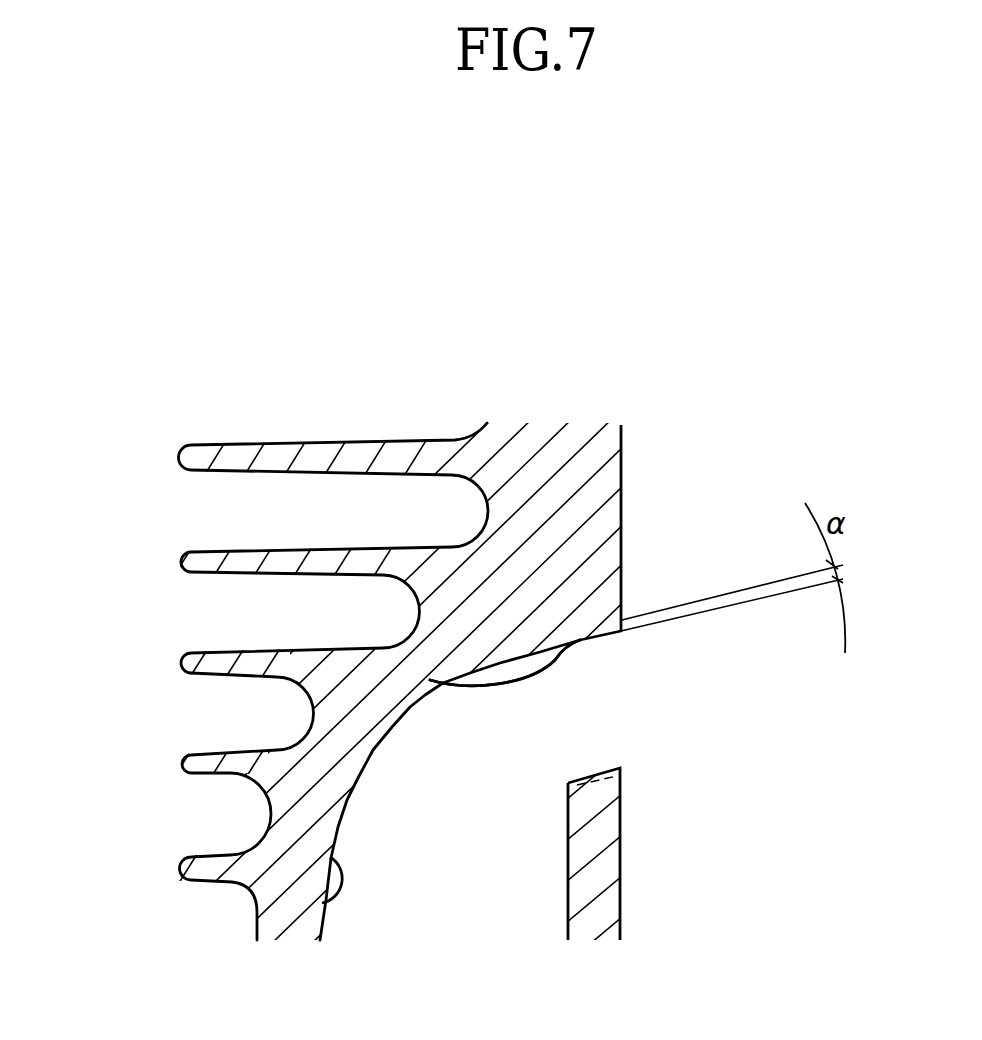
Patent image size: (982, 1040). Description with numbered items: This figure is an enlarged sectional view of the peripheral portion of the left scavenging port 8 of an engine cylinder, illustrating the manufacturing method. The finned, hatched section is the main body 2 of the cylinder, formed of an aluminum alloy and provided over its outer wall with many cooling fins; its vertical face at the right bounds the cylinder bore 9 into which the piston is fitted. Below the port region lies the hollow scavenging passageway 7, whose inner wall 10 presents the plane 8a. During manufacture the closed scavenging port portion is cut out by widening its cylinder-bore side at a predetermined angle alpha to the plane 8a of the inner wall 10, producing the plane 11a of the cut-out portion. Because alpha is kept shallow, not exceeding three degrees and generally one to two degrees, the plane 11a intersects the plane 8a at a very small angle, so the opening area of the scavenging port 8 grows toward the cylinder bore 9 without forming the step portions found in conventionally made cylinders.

The main body 2 is at (382, 443).
The hollow scavenging passageway 7 is at (327, 902).
The scavenging port 8 is at (430, 681).
The plane of the inner wall 8a is at (505, 663).
The cylinder bore 9 is at (628, 455).
The inner wall 10 is at (570, 875).
The plane of the cut-out work portion 11a is at (613, 628).